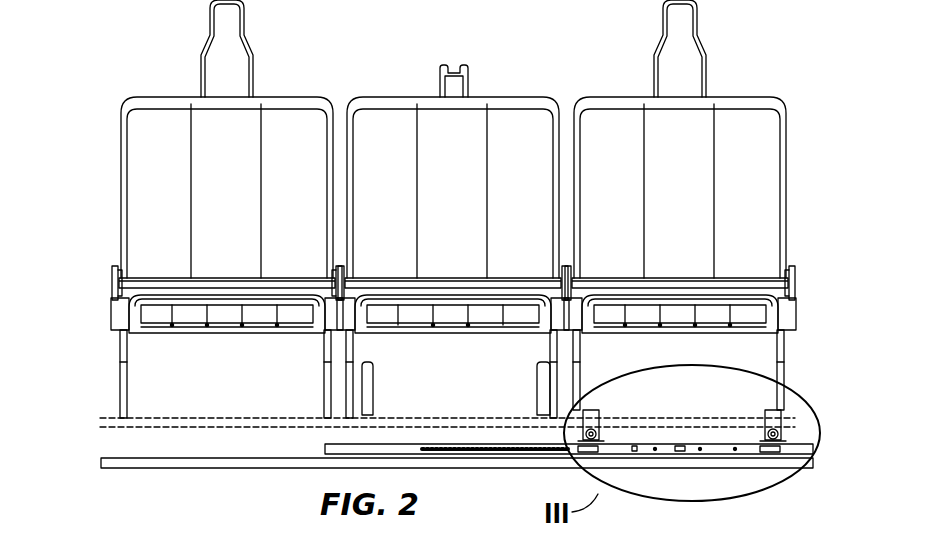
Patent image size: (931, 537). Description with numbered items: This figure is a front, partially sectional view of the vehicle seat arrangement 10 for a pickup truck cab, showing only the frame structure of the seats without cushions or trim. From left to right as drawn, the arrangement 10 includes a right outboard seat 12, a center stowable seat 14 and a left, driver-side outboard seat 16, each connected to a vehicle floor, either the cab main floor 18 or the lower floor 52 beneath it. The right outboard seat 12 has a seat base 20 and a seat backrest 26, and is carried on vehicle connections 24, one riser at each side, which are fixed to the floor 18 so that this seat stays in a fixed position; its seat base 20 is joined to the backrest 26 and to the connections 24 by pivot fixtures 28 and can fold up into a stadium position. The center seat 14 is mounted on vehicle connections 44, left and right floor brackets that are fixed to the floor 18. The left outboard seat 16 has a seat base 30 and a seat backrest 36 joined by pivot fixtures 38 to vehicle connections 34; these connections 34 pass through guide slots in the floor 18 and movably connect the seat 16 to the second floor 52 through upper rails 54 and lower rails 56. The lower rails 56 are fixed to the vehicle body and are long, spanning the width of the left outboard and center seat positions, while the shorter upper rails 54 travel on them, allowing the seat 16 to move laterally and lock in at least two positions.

The seat arrangement 10 is at (110, 90).
The right outboard seat 12 is at (265, 78).
The center seat 14 is at (480, 85).
The left outboard seat 16 is at (713, 85).
The vehicle floor 18 is at (205, 418).
The seat base 20 is at (195, 330).
The vehicle connections 24 is at (120, 408).
The seat backrest 26 is at (123, 200).
The pivot fixtures 28 is at (112, 296).
The seat base 30 is at (633, 297).
The vehicle connections 34 is at (765, 405).
The seat backrest 36 is at (783, 108).
The pivot fixtures 38 is at (794, 297).
The vehicle connections 44 is at (368, 385).
The lower floor 52 is at (270, 462).
The upper rails 54 is at (513, 456).
The lower rails 56 is at (662, 447).